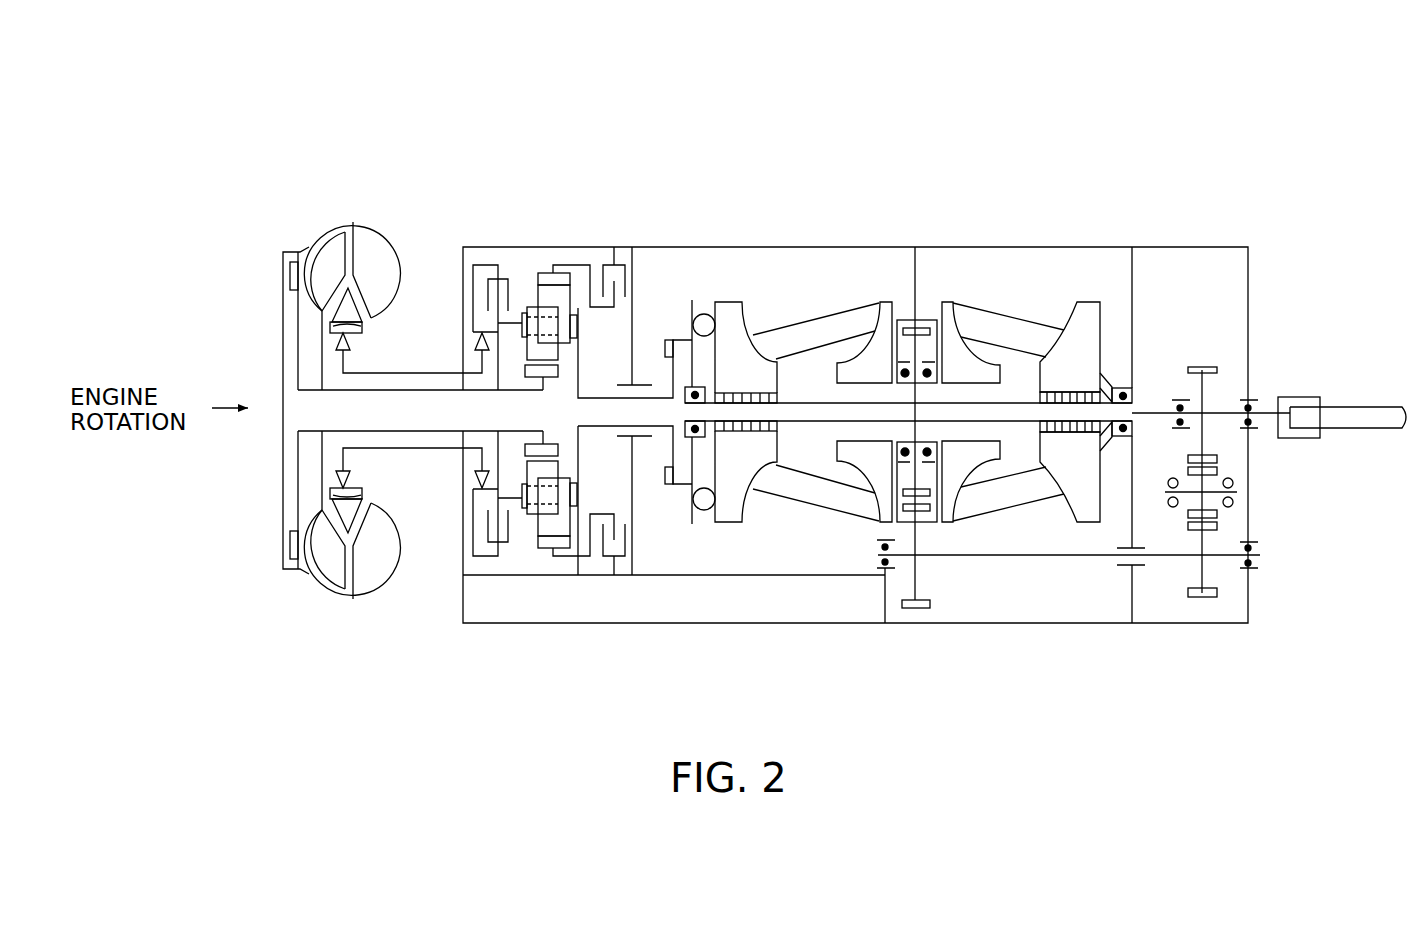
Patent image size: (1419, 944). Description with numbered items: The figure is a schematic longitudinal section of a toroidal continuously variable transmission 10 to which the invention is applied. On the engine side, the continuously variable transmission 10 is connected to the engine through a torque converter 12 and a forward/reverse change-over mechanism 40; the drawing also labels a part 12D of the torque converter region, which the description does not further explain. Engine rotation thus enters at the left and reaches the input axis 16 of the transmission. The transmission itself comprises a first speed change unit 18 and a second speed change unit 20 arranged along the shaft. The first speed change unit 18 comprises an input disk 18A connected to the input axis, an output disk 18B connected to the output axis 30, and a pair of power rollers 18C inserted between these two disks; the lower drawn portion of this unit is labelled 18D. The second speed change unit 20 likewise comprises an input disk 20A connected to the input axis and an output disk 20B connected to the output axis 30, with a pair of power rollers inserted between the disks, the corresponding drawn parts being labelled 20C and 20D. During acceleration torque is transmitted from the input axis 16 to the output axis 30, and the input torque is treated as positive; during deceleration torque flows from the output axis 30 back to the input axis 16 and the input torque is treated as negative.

The continuously variable transmission 10 is at (964, 139).
The torque converter 12 is at (345, 213).
The damper 12D is at (293, 313).
The forward/reverse change-over mechanism 40 is at (525, 267).
The input axis 16 is at (808, 425).
The first speed change unit 18 is at (773, 299).
The input disk 18A is at (728, 298).
The output disk 18B is at (887, 300).
The power rollers 18C is at (860, 302).
The primary pulley movable sheave lower half 18D is at (848, 505).
The second speed change unit 20 is at (1008, 276).
The input disk 20A is at (1093, 300).
The output disk 20B is at (945, 300).
The belt 20C is at (1053, 310).
The secondary pulley movable sheave lower half 20D is at (1000, 490).
The output axis 30 is at (1043, 558).